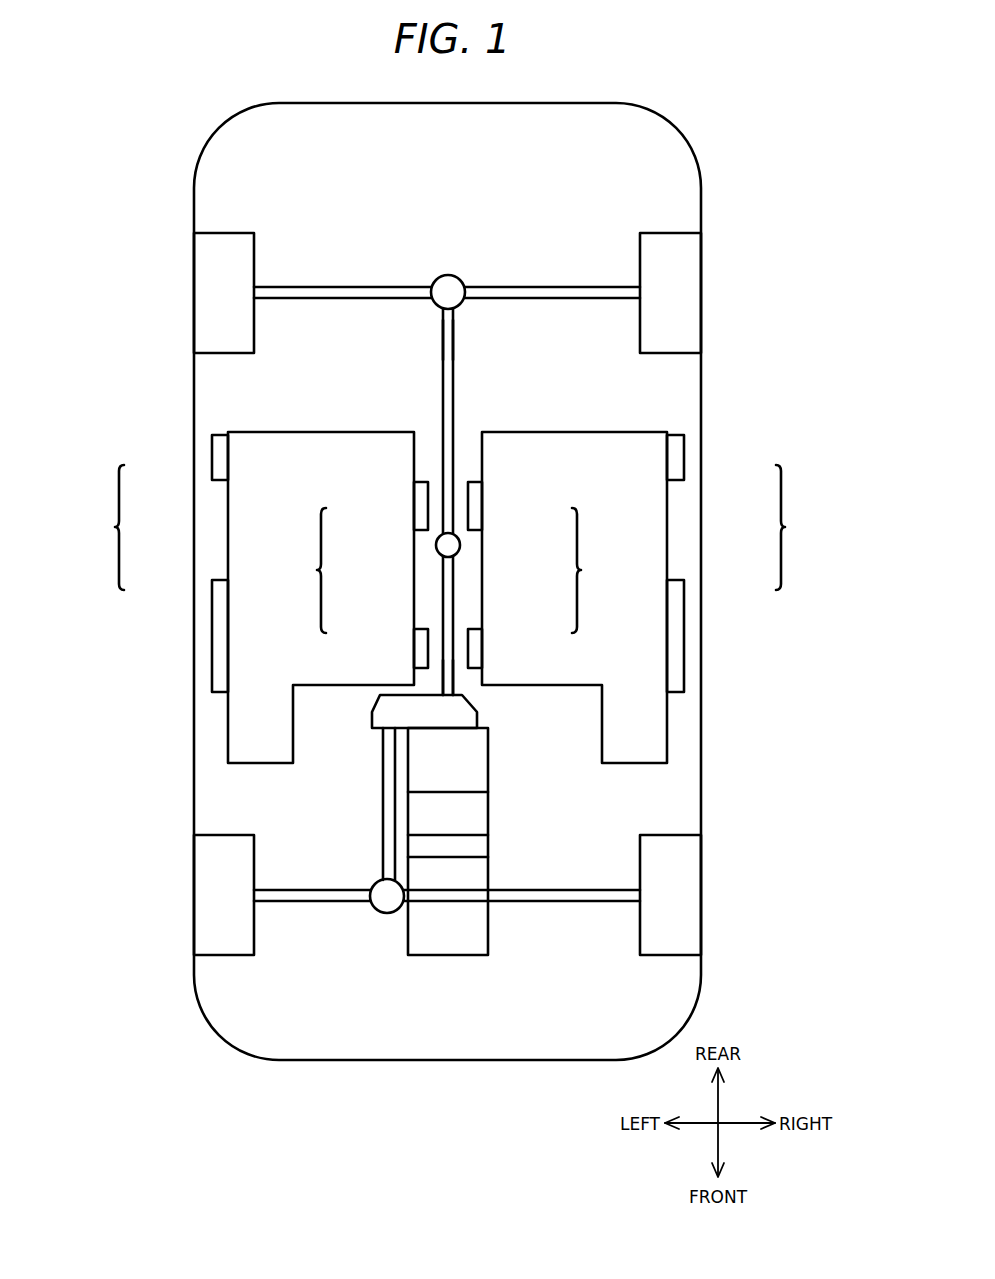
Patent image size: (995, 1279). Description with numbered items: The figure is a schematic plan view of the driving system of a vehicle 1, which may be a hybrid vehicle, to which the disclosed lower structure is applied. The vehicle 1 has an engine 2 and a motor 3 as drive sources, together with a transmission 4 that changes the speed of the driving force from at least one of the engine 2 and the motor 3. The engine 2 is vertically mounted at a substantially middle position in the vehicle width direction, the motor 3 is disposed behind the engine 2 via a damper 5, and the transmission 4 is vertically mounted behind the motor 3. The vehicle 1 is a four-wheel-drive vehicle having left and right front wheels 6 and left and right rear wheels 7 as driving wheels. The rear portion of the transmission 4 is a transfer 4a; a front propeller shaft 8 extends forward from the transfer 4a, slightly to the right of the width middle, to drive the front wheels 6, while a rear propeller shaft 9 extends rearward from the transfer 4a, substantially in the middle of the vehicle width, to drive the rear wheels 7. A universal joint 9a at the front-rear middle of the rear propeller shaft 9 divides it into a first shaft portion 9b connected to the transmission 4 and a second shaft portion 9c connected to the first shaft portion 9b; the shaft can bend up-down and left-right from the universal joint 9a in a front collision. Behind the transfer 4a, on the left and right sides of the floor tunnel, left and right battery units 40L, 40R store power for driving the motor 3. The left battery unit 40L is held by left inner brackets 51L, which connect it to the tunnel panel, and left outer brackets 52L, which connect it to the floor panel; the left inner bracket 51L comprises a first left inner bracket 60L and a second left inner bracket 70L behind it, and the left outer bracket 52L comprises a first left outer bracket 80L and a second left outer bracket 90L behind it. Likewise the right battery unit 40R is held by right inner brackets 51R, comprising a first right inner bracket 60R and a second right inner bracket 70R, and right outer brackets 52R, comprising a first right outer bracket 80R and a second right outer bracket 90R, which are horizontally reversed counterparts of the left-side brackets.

The vehicle 1 is at (770, 126).
The engine 2 is at (450, 955).
The motor 3 is at (488, 814).
The transmission 4 is at (488, 761).
The transfer 4a is at (372, 713).
The damper 5 is at (488, 846).
The front wheels 6 is at (203, 913).
The rear wheels 7 is at (203, 315).
The front propeller shaft 8 is at (383, 815).
The rear propeller shaft 9 is at (454, 403).
The universal joint 9a is at (437, 546).
The first shaft portion 9b is at (458, 690).
The second shaft portion 9c is at (443, 341).
The left battery unit 40L is at (282, 432).
The right battery unit 40R is at (568, 432).
The left inner bracket 51L is at (344, 575).
The right inner bracket 51R is at (553, 575).
The left outer bracket 52L is at (144, 563).
The right outer bracket 52R is at (752, 563).
The first left inner bracket 60L is at (414, 648).
The first right inner bracket 60R is at (482, 648).
The second left inner bracket 70L is at (414, 501).
The second right inner bracket 70R is at (482, 501).
The first left outer bracket 80L is at (212, 607).
The first right outer bracket 80R is at (684, 607).
The second left outer bracket 90L is at (212, 459).
The second right outer bracket 90R is at (684, 459).